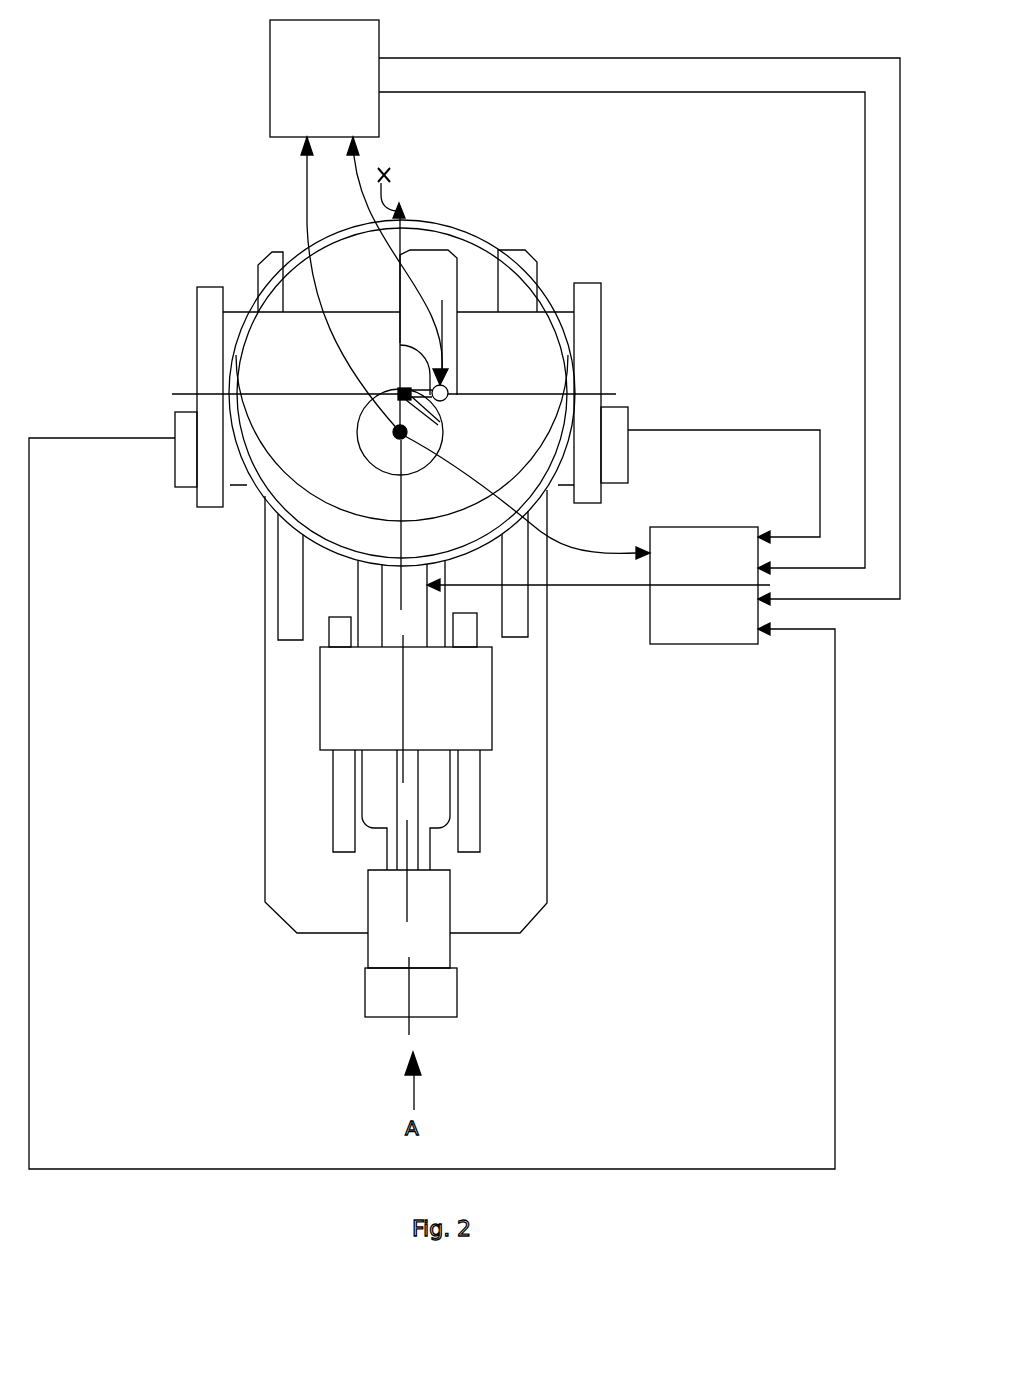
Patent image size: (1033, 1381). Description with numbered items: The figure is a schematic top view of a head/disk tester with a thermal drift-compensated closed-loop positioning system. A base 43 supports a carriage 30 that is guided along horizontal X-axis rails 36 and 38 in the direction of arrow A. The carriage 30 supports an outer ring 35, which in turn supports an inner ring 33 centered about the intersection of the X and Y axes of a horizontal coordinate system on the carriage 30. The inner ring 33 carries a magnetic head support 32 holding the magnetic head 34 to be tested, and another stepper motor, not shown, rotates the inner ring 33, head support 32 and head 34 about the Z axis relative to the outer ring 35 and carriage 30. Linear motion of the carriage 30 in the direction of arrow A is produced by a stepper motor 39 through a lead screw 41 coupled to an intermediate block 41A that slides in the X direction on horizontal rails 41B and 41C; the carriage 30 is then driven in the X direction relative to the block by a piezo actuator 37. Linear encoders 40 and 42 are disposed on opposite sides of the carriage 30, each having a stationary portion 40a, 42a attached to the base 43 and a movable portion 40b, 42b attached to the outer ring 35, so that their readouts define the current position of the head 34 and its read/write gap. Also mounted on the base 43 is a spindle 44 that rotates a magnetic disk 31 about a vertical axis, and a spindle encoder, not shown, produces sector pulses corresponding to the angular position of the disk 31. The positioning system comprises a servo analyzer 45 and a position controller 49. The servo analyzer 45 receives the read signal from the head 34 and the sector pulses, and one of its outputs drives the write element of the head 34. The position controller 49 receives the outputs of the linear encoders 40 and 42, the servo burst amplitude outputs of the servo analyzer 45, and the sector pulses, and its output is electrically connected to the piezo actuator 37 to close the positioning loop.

The carriage 30 is at (568, 312).
The magnetic disk 31 is at (390, 448).
The magnetic head support 32 is at (433, 288).
The inner ring 33 is at (503, 527).
The magnetic head 34 is at (440, 422).
The outer ring 35 is at (348, 237).
The horizontal rail 36 is at (510, 598).
The piezo actuator 37 is at (407, 610).
The horizontal rail 38 is at (295, 617).
The stepper motor 39 is at (393, 990).
The linear encoder 40 is at (652, 365).
The stationary encoder portion 40a is at (617, 445).
The movable encoder portion 40b is at (590, 353).
The lead screw 41 is at (417, 787).
The intermediate block 41A is at (477, 687).
The horizontal rail 41B is at (340, 803).
The horizontal rail 41C is at (472, 838).
The linear encoder 42 is at (150, 363).
The stationary encoder portion 42a is at (185, 463).
The movable encoder portion 42b is at (213, 343).
The base 43 is at (493, 878).
The spindle 44 is at (402, 393).
The servo analyzer 45 is at (282, 36).
The position controller 49 is at (710, 625).